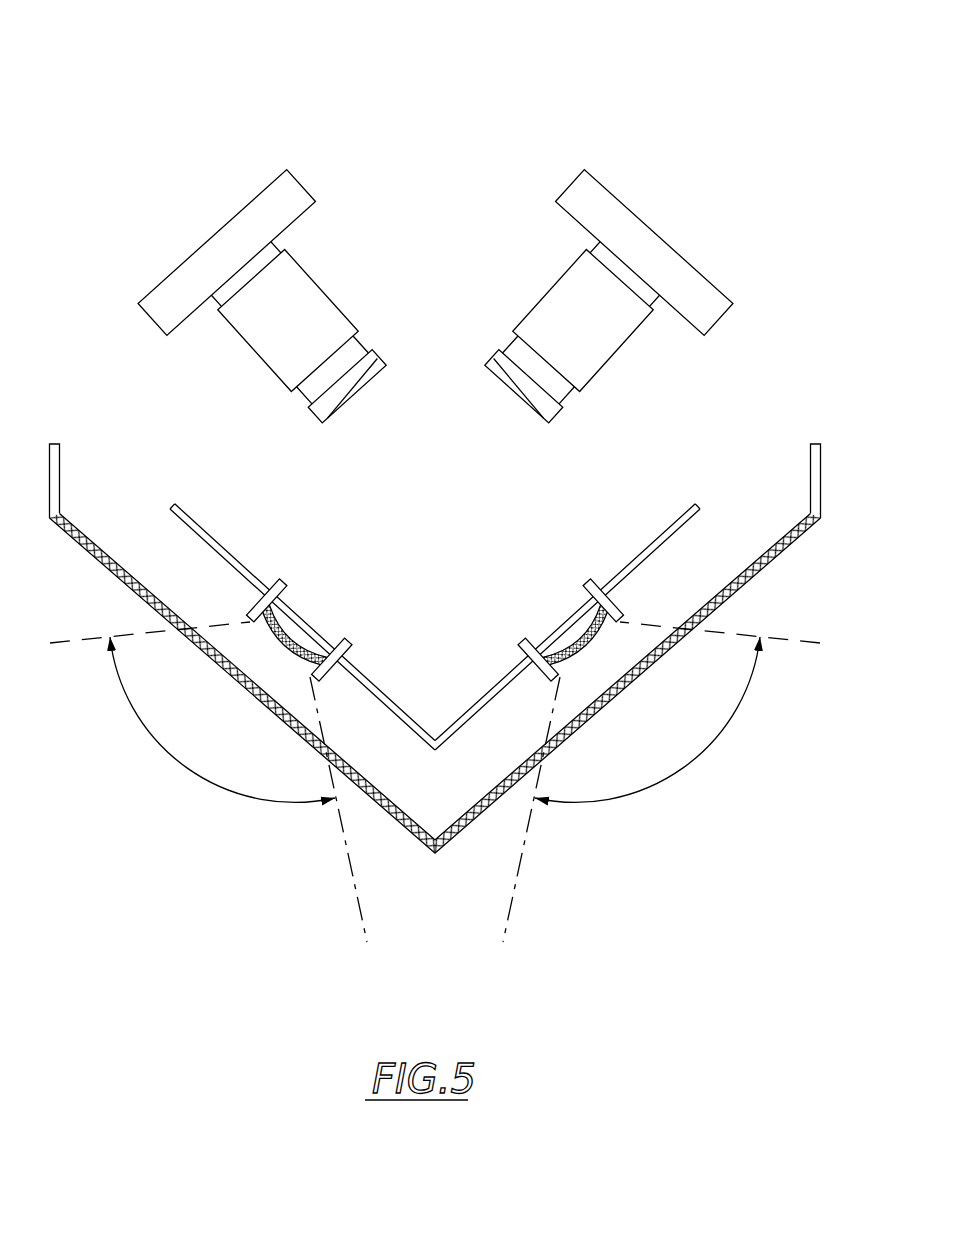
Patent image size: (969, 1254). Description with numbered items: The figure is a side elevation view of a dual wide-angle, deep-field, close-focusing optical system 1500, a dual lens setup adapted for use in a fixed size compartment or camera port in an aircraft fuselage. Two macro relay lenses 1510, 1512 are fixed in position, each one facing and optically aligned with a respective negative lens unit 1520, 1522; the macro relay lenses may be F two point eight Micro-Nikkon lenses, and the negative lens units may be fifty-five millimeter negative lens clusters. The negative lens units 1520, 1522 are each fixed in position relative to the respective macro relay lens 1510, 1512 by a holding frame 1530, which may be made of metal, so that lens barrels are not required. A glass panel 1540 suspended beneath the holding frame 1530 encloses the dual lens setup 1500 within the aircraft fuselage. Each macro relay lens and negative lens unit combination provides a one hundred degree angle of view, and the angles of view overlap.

The dual wide-angle, deep-field, close-focusing optical system 1500 is at (551, 118).
The macro relay lens 1510 is at (331, 296).
The macro relay lens 1512 is at (549, 289).
The negative lens unit 1520 is at (577, 573).
The negative lens unit 1522 is at (290, 573).
The holding frame 1530 is at (672, 527).
The glass panel 1540 is at (787, 537).